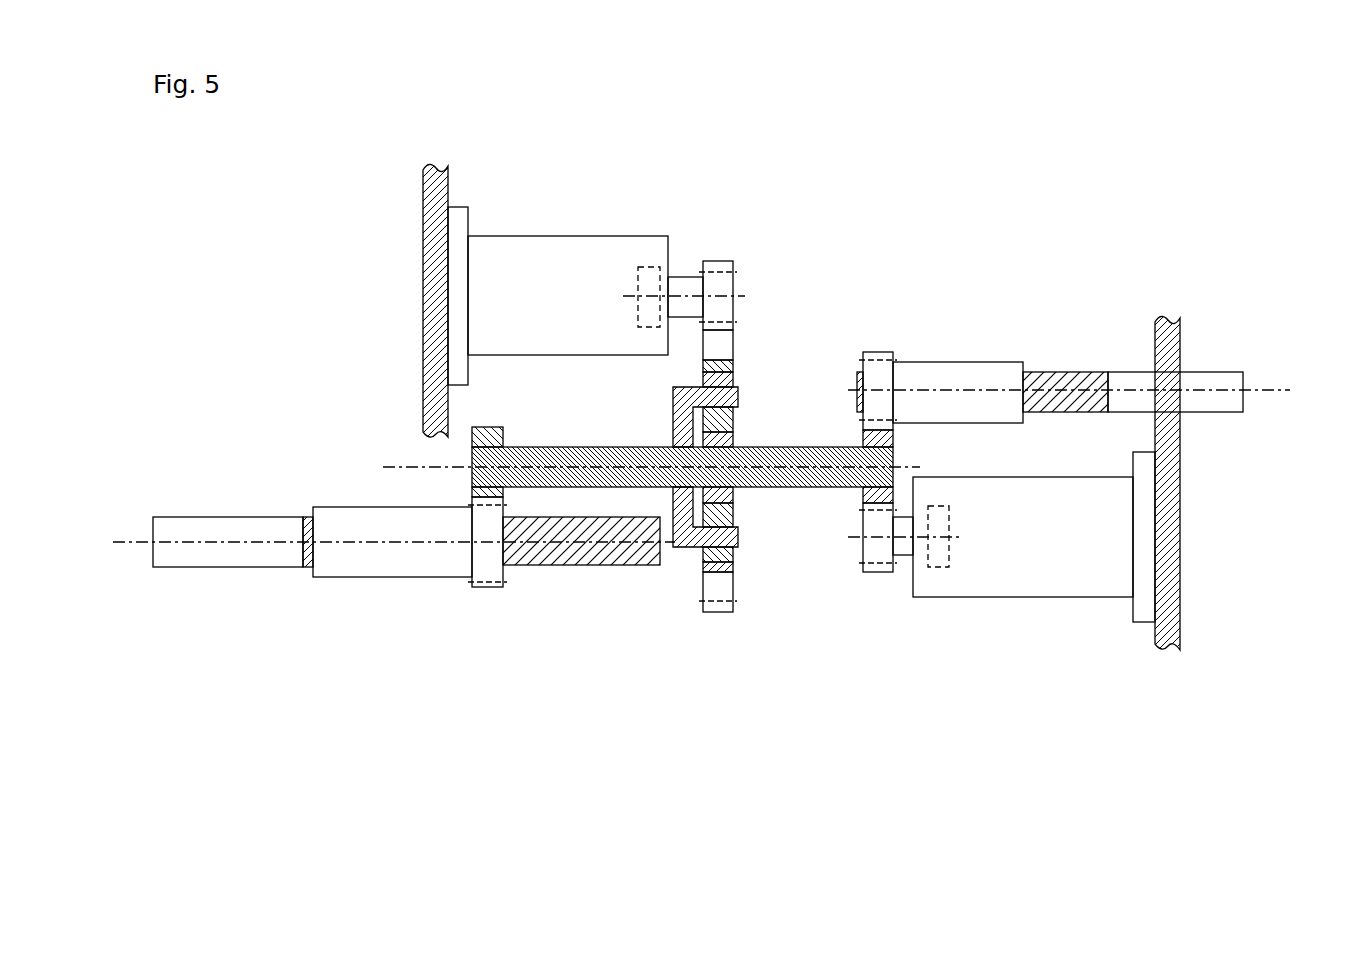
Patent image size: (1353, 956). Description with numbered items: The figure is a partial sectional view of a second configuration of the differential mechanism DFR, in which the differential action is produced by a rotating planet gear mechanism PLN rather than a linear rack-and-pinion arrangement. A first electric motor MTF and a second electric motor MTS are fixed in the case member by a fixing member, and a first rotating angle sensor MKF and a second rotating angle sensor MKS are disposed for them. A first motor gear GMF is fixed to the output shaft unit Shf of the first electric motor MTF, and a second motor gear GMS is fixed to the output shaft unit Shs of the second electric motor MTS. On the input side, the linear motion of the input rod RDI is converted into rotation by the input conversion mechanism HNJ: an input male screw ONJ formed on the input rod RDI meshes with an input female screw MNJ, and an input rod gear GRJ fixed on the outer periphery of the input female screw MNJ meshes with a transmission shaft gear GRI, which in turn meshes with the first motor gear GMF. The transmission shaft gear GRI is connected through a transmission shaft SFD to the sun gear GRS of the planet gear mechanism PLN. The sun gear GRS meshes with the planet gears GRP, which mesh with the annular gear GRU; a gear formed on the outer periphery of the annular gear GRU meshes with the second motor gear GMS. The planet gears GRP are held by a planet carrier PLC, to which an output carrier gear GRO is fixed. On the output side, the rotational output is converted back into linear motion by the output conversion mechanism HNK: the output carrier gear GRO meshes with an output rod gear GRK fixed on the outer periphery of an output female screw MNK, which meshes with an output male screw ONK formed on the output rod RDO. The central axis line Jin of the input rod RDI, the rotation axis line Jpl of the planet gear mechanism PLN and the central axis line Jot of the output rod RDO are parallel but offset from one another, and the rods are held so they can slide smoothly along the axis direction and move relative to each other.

The second electric motor MTS is at (568, 295).
The second rotating angle sensor MKS is at (642, 268).
The output shaft unit of the second electric motor Shs is at (688, 280).
The second motor gear GMS is at (733, 285).
The annular gear (ring gear) GRU is at (733, 346).
The planet gear GRP is at (733, 378).
The differential mechanism DFR is at (838, 294).
The planet gear mechanism PLN is at (768, 581).
The planet carrier PLC is at (673, 414).
The sun gear GRS is at (733, 490).
The transmission shaft SFD is at (793, 447).
The rotation axis line of the planet gear mechanism Jpl is at (385, 467).
The output carrier gear GRO is at (490, 427).
The output conversion mechanism HNK is at (432, 603).
The output rod gear GRK is at (495, 588).
The output female screw MNK is at (348, 580).
The output male screw ONK is at (570, 567).
The output rod RDO is at (250, 517).
The central axis line of the output rod Jot is at (117, 542).
The central axis line of the input rod Jin is at (1263, 390).
The input conversion mechanism HNJ is at (939, 344).
The input rod gear GRJ is at (875, 352).
The input female screw MNJ is at (978, 362).
The input male screw ONJ is at (1060, 372).
The input rod RDI is at (1208, 372).
The transmission shaft gear GRI is at (893, 440).
The first motor gear GMF is at (882, 572).
The output shaft unit of the first electric motor Shf is at (907, 553).
The first electric motor MTF is at (1023, 537).
The first rotating angle sensor MKF is at (948, 563).